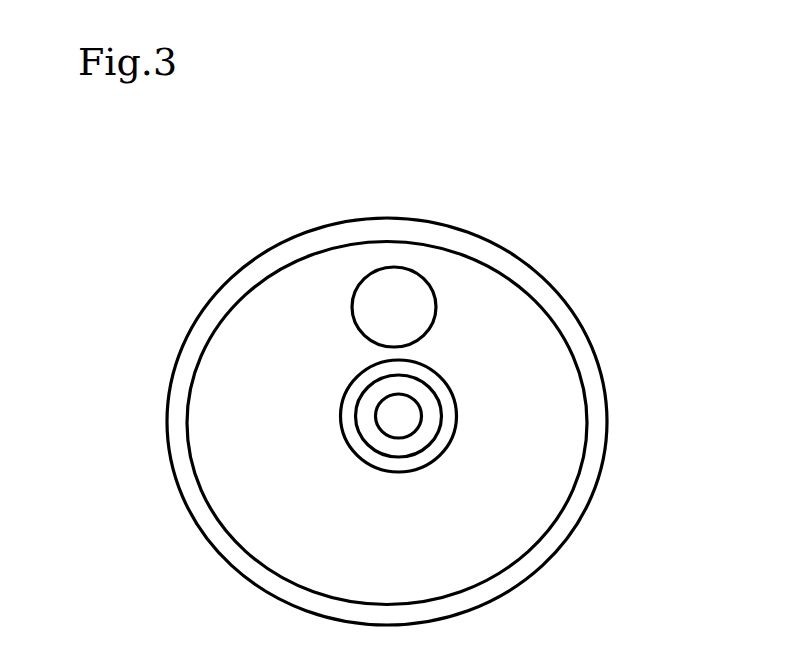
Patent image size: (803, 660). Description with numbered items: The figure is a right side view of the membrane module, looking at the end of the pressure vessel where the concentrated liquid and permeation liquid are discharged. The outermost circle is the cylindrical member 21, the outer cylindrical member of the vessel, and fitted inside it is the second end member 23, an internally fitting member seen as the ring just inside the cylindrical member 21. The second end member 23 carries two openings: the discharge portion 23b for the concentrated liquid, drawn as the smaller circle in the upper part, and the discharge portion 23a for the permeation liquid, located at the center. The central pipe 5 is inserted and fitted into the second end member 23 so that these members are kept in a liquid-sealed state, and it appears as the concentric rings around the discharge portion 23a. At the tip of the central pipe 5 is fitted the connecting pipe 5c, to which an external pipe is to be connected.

The cylindrical member 21 is at (545, 274).
The second end member 23 is at (585, 412).
The discharge portion 23a is at (403, 398).
The discharge portion 23b is at (419, 270).
The central pipe 5 is at (440, 430).
The connecting pipe 5c is at (390, 470).